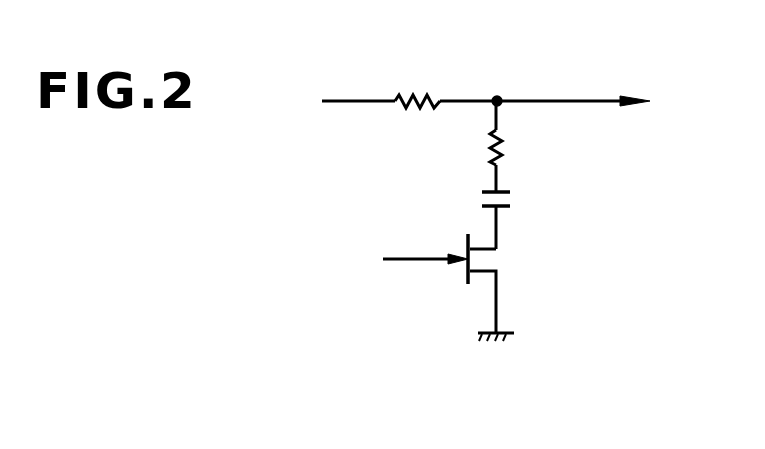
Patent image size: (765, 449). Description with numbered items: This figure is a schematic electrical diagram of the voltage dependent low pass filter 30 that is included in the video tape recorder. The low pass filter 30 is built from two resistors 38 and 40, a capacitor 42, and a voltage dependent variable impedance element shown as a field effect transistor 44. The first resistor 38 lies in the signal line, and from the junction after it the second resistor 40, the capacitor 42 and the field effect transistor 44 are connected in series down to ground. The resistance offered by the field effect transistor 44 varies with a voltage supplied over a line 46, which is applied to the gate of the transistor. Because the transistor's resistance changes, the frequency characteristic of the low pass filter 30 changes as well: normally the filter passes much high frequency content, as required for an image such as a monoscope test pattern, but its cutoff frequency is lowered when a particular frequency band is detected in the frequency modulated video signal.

The voltage dependent low pass filter 30 is at (578, 96).
The resistor 38 is at (413, 95).
The resistor 40 is at (510, 154).
The capacitor 42 is at (510, 192).
The field effect transistor 44 is at (482, 251).
The line 46 is at (413, 262).